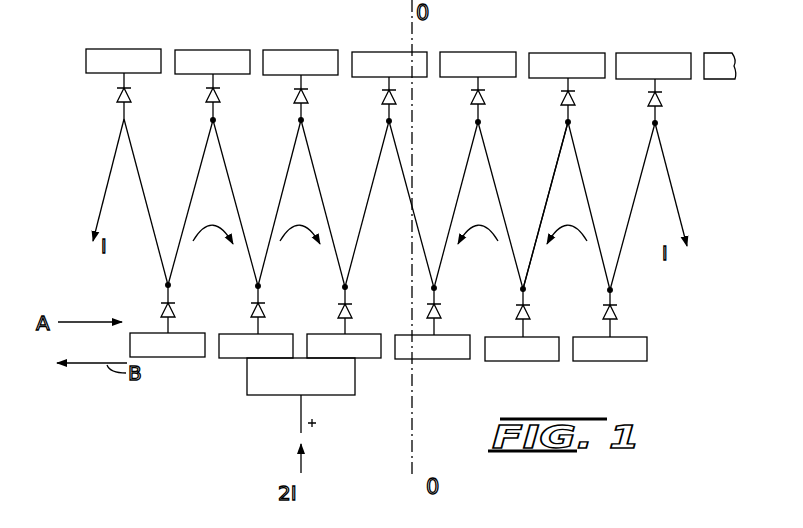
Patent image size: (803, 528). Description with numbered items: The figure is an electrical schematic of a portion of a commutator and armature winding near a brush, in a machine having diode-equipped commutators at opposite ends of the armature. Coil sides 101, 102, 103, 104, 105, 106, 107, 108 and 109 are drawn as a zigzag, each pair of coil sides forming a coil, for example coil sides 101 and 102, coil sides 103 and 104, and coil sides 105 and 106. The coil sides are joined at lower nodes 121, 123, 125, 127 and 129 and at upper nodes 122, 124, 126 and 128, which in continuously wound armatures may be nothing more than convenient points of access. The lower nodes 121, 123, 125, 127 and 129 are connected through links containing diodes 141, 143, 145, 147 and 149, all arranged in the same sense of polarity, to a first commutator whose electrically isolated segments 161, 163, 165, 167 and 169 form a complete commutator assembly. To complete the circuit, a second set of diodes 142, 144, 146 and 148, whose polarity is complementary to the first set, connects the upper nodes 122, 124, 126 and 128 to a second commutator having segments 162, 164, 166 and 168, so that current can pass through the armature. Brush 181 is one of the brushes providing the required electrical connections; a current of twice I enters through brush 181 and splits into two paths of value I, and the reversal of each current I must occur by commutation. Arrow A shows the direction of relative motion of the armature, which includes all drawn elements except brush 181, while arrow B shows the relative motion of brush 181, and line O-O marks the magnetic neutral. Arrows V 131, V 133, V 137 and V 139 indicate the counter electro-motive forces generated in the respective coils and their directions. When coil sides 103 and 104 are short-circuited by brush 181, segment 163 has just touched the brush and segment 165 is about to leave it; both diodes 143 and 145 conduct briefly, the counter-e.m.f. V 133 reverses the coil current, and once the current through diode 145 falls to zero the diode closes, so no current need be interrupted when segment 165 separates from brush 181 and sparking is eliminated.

The coil side 101 is at (193, 190).
The coil side 102 is at (231, 173).
The coil side 103 is at (277, 212).
The coil side 104 is at (315, 168).
The coil side 105 is at (363, 218).
The coil side 106 is at (401, 163).
The coil side 107 is at (457, 207).
The coil side 108 is at (489, 158).
The coil side 109 is at (544, 202).
The node 121 is at (166, 286).
The node 122 is at (211, 121).
The node 123 is at (256, 287).
The node 124 is at (299, 122).
The node 125 is at (343, 288).
The node 126 is at (387, 121).
The node 127 is at (432, 289).
The node 128 is at (476, 124).
The node 129 is at (521, 290).
The counter electro-motive force 131 is at (211, 249).
The counter electro-motive force 133 is at (299, 249).
The counter electro-motive force 137 is at (477, 249).
The counter electro-motive force 139 is at (566, 249).
The diode 141 is at (160, 309).
The diode 142 is at (205, 96).
The diode 143 is at (249, 310).
The diode 144 is at (293, 97).
The diode 145 is at (337, 311).
The diode 146 is at (381, 98).
The diode 147 is at (425, 312).
The diode 148 is at (470, 98).
The diode 149 is at (515, 312).
The commutator segment 161 is at (167, 346).
The commutator segment 162 is at (212, 63).
The commutator segment 163 is at (256, 347).
The commutator segment 164 is at (300, 63).
The commutator segment 165 is at (344, 347).
The commutator segment 166 is at (389, 65).
The commutator segment 167 is at (432, 348).
The commutator segment 168 is at (478, 65).
The commutator segment 169 is at (522, 350).
The brush 181 is at (301, 376).